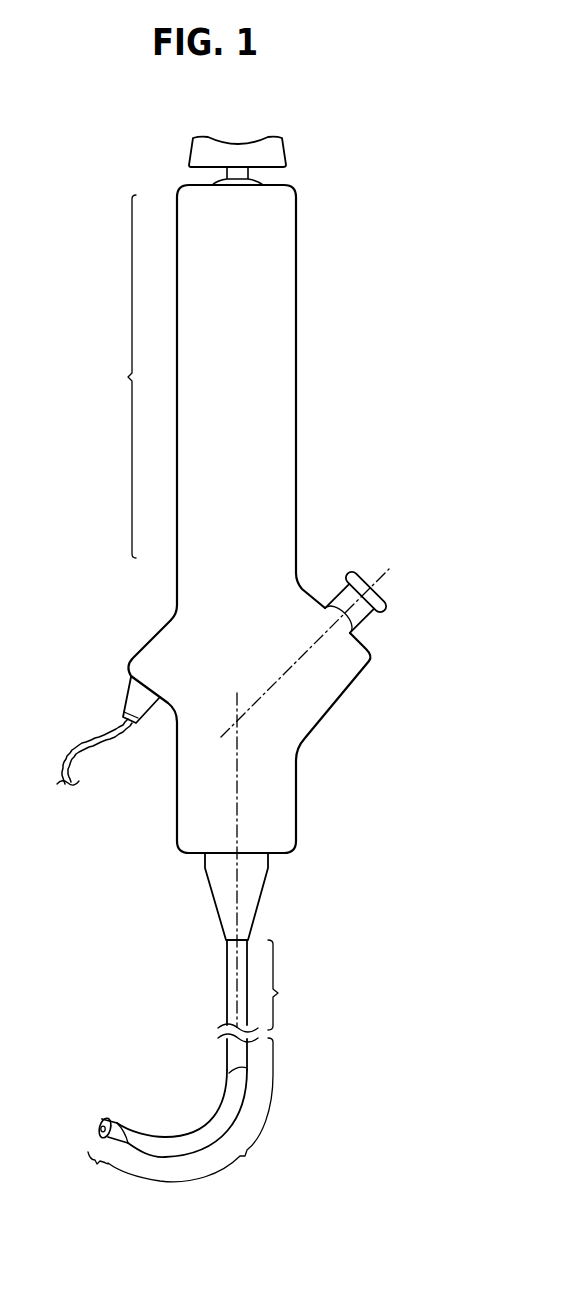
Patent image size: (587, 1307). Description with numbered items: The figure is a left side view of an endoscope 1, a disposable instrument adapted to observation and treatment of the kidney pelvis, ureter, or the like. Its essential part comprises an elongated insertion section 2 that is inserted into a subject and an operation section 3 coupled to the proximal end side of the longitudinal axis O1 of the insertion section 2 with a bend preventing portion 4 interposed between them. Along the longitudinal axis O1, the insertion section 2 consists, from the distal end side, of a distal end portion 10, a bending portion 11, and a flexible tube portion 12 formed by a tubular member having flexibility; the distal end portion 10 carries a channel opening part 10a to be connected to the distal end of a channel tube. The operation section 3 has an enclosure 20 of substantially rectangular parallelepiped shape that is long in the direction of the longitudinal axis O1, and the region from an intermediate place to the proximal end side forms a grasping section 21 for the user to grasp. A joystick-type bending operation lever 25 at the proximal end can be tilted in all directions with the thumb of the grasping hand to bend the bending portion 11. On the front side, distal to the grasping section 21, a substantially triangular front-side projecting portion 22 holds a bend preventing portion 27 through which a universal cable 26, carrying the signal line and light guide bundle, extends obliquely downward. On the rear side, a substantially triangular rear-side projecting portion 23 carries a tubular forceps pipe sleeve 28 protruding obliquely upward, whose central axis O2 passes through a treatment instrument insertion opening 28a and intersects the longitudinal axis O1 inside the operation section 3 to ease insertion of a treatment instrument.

The endoscope 1 is at (451, 272).
The insertion section 2 is at (125, 1037).
The operation section 3 is at (376, 472).
The bend preventing portion 4 is at (268, 865).
The distal end portion 10 is at (91, 1152).
The channel opening part 10a is at (101, 1129).
The bending portion 11 is at (190, 1110).
The flexible tube portion 12 is at (263, 1005).
The enclosure 20 is at (296, 393).
The grasping section 21 is at (118, 376).
The front-side projecting portion 22 is at (127, 662).
The rear-side projecting portion 23 is at (363, 663).
The bending operation lever 25 is at (287, 143).
The universal cable 26 is at (90, 747).
The bend preventing portion 27 is at (123, 698).
The forceps pipe sleeve 28 is at (368, 617).
The treatment instrument insertion opening 28a is at (387, 588).
The longitudinal axis O1 is at (237, 866).
The central axis O2 is at (345, 613).